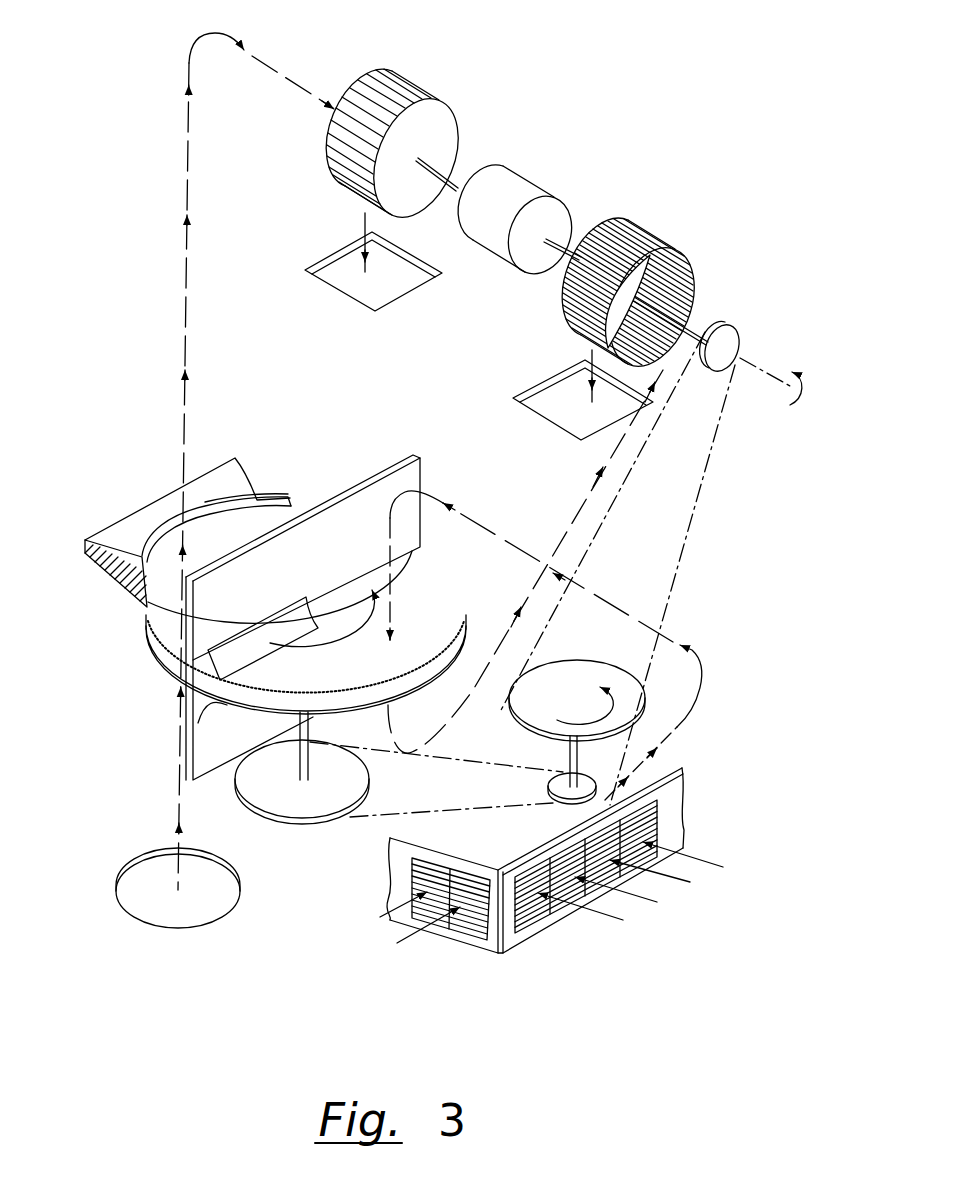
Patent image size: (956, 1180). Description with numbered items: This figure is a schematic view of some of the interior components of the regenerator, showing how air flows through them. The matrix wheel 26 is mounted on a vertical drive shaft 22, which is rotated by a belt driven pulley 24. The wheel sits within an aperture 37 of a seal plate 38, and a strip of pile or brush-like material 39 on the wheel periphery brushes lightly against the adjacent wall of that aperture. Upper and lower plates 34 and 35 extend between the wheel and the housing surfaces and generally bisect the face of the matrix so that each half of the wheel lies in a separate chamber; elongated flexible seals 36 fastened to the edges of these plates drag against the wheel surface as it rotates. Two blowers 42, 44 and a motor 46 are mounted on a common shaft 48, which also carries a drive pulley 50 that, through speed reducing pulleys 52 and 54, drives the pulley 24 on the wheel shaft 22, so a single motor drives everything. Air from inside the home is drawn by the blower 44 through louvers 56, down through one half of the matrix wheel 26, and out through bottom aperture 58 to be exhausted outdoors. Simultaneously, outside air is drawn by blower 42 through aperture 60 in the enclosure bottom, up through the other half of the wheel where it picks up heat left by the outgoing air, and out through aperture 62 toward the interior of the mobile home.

The vertical drive shaft 22 is at (308, 763).
The belt driven pulley 24 is at (295, 823).
The matrix wheel 26 is at (458, 582).
The upper plate 34 is at (392, 460).
The lower plate 35 is at (186, 763).
The elongated flexible seals 36 is at (264, 639).
The aperture 37 is at (293, 508).
The seal plate 38 is at (137, 512).
The strip of pile or brush-like material 39 is at (175, 670).
The blower 42 is at (410, 88).
The blower 44 is at (655, 233).
The motor 46 is at (530, 187).
The shaft 48 is at (457, 173).
The drive pulley 50 is at (740, 334).
The speed reducing pulley 52 is at (595, 662).
The speed reducing pulley 54 is at (548, 787).
The louvers 56 is at (465, 925).
The bottom aperture 58 is at (552, 373).
The aperture 60 is at (238, 908).
The aperture 62 is at (410, 292).